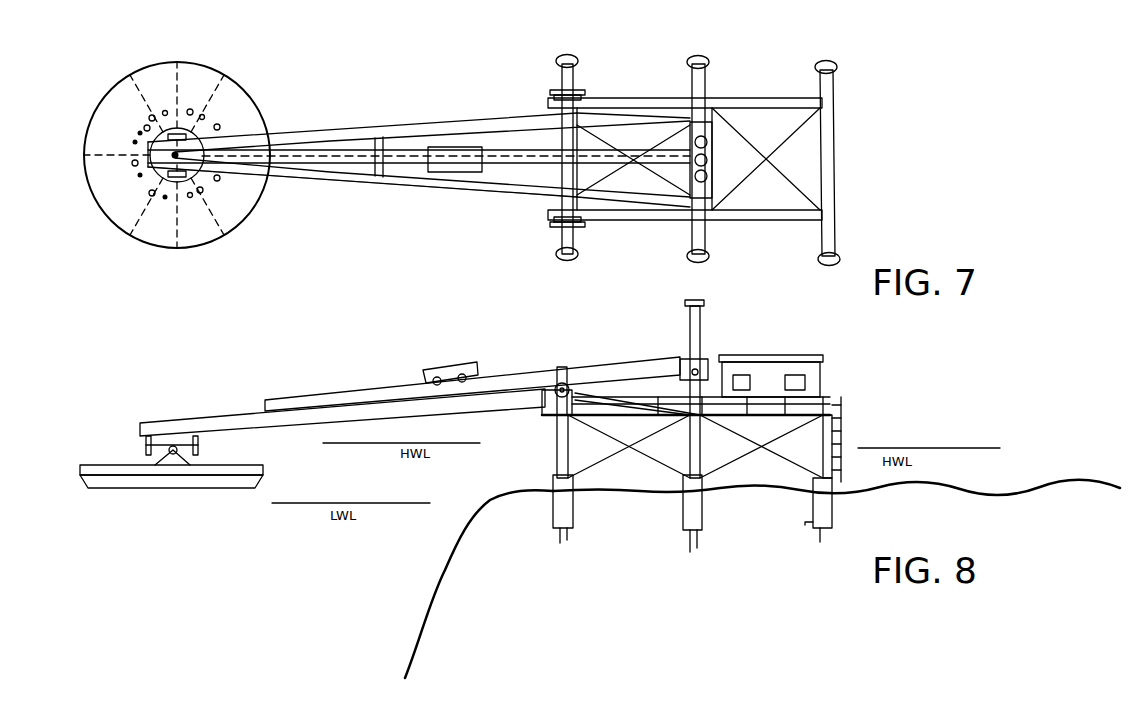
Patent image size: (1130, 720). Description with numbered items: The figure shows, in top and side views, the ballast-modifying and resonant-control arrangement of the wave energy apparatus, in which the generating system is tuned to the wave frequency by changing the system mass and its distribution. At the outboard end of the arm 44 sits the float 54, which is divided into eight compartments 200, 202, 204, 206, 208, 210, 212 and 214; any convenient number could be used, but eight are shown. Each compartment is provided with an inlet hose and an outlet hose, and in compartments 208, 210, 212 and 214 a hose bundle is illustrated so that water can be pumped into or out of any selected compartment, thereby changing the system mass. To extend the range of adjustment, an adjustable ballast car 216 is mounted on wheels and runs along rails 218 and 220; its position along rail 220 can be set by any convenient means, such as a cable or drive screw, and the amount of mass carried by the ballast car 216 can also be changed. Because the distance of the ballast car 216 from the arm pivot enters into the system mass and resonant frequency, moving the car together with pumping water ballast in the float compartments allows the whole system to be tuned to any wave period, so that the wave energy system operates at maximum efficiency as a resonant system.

In FIG. 7, the boom 44 is at (400, 128).
In FIG. 7, the indexing wheel 54 is at (248, 92).
In FIG. 7, the float compartment 200 is at (128, 173).
In FIG. 7, the float compartment 202 is at (153, 202).
In FIG. 7, the float compartment 204 is at (196, 202).
In FIG. 7, the float compartment 206 is at (226, 180).
In FIG. 7, the float compartment 208 is at (226, 130).
In FIG. 7, the float compartment 210 is at (199, 108).
In FIG. 7, the float compartment 212 is at (151, 110).
In FIG. 7, the float compartment 214 is at (128, 138).
In FIG. 7, the adjustable ballast car 216 is at (465, 173).
In FIG. 8, the adjustable ballast car 216 is at (450, 362).
In FIG. 7, the rail 218 is at (498, 150).
In FIG. 7, the rail 220 is at (530, 165).
In FIG. 8, the rail 220 is at (305, 397).